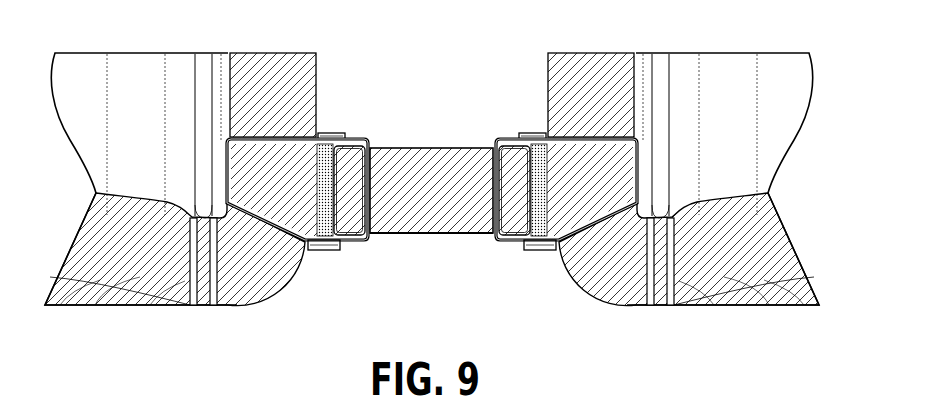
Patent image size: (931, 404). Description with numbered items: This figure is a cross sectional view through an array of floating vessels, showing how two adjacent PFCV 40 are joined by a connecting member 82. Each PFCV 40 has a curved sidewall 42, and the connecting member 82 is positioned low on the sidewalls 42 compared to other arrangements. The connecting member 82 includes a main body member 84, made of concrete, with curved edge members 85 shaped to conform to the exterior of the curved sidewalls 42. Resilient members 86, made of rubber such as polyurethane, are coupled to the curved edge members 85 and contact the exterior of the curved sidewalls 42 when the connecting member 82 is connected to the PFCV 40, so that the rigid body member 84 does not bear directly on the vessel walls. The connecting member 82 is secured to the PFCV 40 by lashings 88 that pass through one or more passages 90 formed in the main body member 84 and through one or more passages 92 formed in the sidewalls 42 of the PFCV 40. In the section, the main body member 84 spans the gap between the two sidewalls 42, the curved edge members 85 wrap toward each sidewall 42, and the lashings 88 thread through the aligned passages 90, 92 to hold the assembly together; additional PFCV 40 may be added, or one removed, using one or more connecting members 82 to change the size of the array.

The PFCV 40 is at (84, 53).
The curved sidewall 42 is at (240, 98).
The connecting member 82 is at (428, 148).
The main body member 84 is at (437, 235).
The curved edge member 85 is at (543, 252).
The resilient member 86 is at (327, 133).
The lashing 88 is at (356, 142).
The passage 90 is at (368, 205).
The passage 92 is at (283, 133).